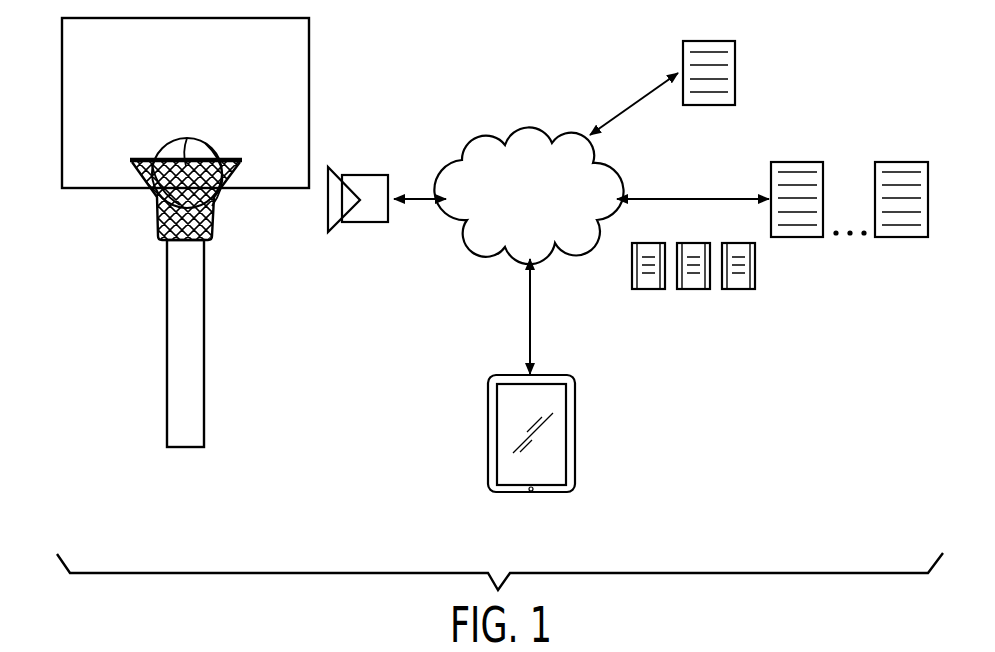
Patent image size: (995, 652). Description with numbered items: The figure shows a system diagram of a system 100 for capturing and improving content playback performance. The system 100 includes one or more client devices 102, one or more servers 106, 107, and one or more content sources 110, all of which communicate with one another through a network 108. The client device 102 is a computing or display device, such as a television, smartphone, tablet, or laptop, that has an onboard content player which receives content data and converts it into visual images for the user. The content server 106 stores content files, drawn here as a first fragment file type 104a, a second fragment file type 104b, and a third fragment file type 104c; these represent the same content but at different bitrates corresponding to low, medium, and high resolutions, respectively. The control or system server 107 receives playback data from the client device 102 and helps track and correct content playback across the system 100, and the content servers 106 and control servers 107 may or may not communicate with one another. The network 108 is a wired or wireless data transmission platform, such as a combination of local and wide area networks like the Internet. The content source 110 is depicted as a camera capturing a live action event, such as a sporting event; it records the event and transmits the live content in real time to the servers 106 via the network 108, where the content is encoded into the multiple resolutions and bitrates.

The system 100 is at (623, 55).
The client device 102 is at (575, 405).
The first fragment file type 104a is at (645, 289).
The second fragment file type 104b is at (690, 243).
The third fragment file type 104c is at (735, 289).
The content server 106 is at (795, 237).
The control server 107 is at (735, 72).
The network 108 is at (550, 226).
The content source 110 is at (362, 223).